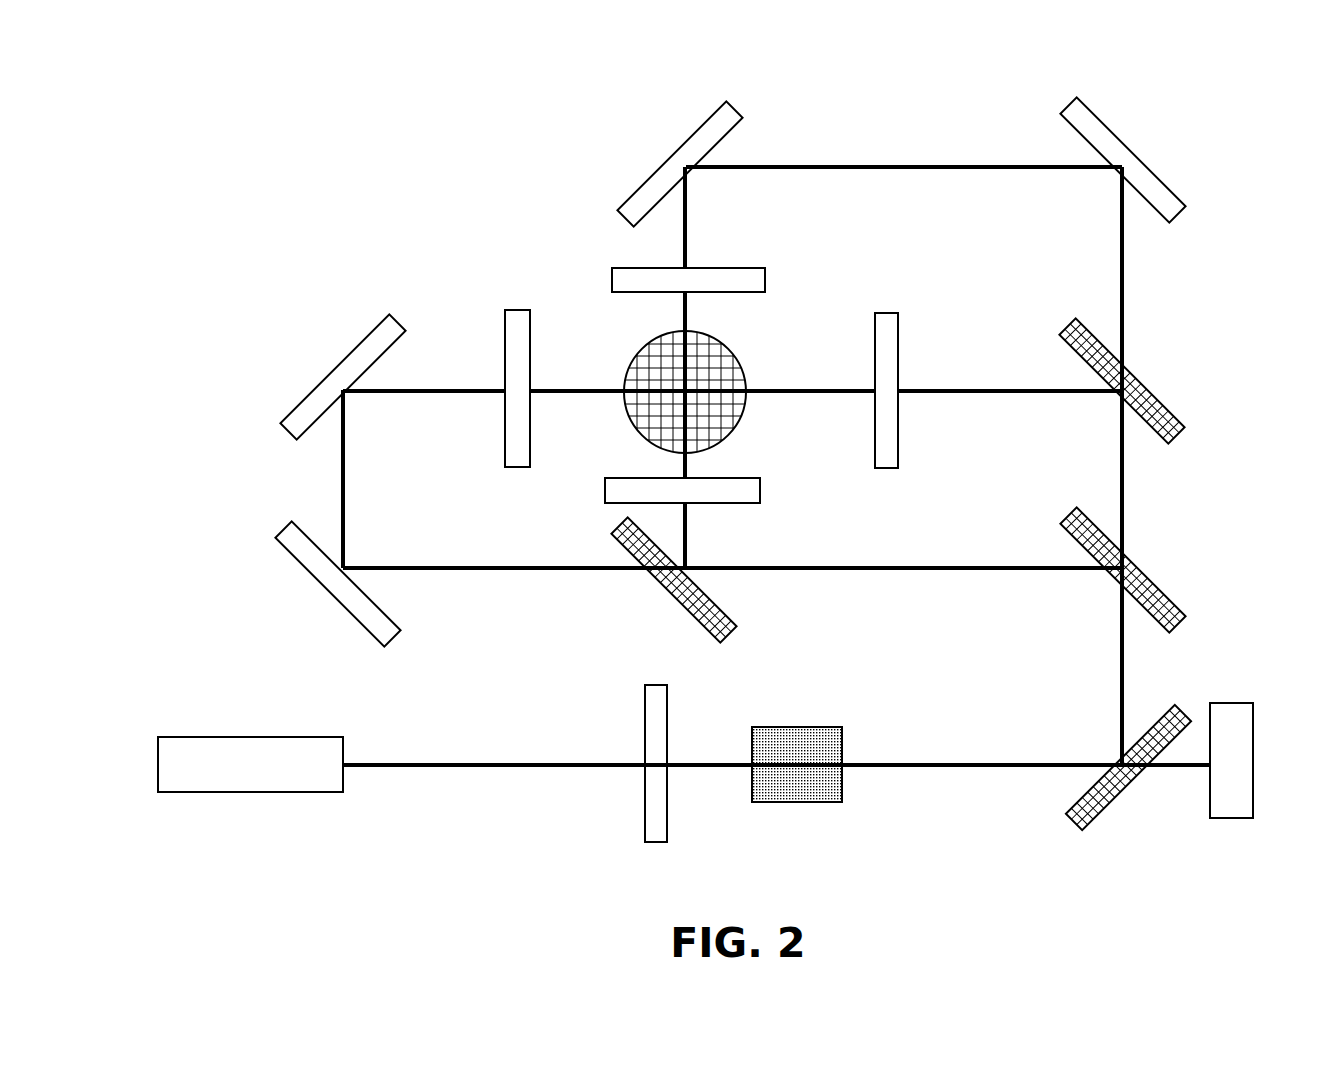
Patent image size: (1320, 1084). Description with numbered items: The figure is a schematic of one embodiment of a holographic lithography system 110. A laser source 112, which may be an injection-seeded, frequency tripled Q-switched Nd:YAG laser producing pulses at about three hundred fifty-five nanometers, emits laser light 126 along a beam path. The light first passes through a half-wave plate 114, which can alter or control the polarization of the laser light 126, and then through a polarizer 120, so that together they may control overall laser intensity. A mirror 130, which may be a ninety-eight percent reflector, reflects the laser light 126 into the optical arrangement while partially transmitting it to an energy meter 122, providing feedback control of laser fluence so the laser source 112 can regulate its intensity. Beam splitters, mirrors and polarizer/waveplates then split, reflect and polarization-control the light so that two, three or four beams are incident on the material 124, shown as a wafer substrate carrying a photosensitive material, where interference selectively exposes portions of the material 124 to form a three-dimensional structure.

The holographic lithography system 110 is at (226, 148).
The laser source 112 is at (250, 735).
The half-wave plate 114 is at (643, 735).
The polarizer 120 is at (843, 735).
The energy meter 122 is at (1237, 703).
The material 124 is at (742, 363).
The laser light 126 is at (483, 767).
The mirror 130 is at (1068, 813).